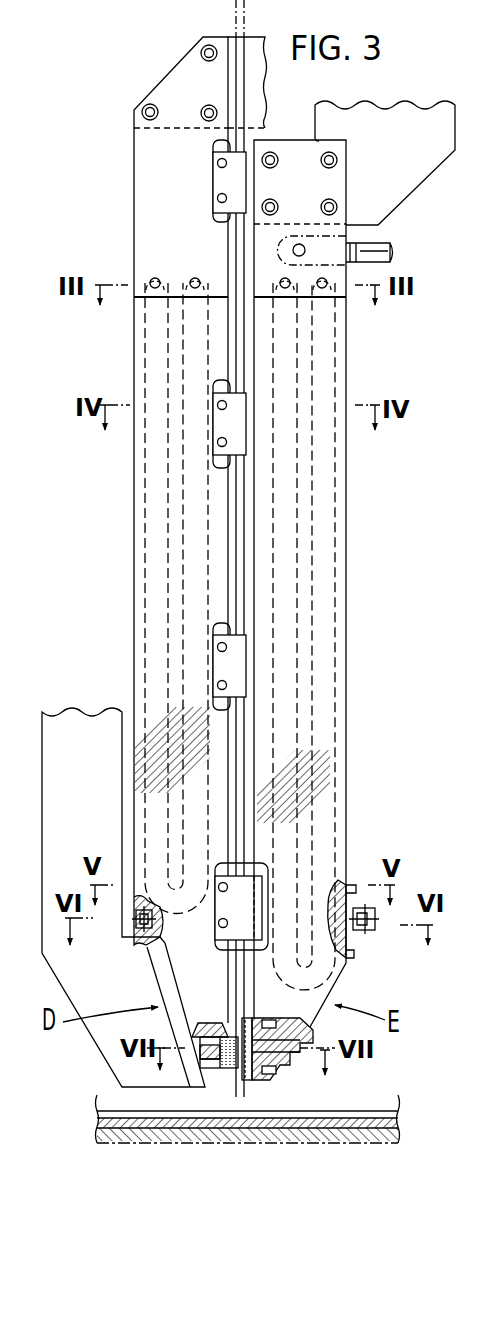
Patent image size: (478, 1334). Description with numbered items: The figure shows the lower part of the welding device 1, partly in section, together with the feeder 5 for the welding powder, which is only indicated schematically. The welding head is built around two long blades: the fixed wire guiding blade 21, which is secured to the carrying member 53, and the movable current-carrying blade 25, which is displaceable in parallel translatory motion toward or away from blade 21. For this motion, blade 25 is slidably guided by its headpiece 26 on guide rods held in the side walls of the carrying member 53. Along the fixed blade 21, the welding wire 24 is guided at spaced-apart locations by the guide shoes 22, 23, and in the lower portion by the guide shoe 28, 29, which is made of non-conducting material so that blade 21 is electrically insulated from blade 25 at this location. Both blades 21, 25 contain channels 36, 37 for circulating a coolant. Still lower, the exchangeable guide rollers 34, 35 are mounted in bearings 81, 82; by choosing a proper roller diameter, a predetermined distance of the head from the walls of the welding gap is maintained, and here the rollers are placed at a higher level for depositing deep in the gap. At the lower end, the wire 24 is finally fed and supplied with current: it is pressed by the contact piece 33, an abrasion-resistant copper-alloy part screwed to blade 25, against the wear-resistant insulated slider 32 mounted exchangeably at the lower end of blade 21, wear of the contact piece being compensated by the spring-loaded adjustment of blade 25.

The device assembly 1 is at (285, 899).
The feeder 5 is at (62, 730).
The fixed wire guiding blade 21 is at (132, 550).
The guide shoe 22 is at (218, 179).
The guide shoe 23 is at (220, 663).
The welding wire 24 is at (240, 585).
The movable current-carrying blade 25 is at (338, 590).
The headpiece 26 is at (418, 176).
The guide shoe 28 is at (330, 808).
The guide shoe 29 is at (293, 786).
The slider 32 is at (222, 1025).
The contact piece 33 is at (245, 1078).
The guide roller 34 is at (378, 920).
The guide roller 35 is at (132, 925).
The coolant channel 36 is at (150, 620).
The coolant channel 37 is at (325, 650).
The carrying member 53 is at (230, 37).
The bearing 81 is at (360, 940).
The bearing 82 is at (147, 935).